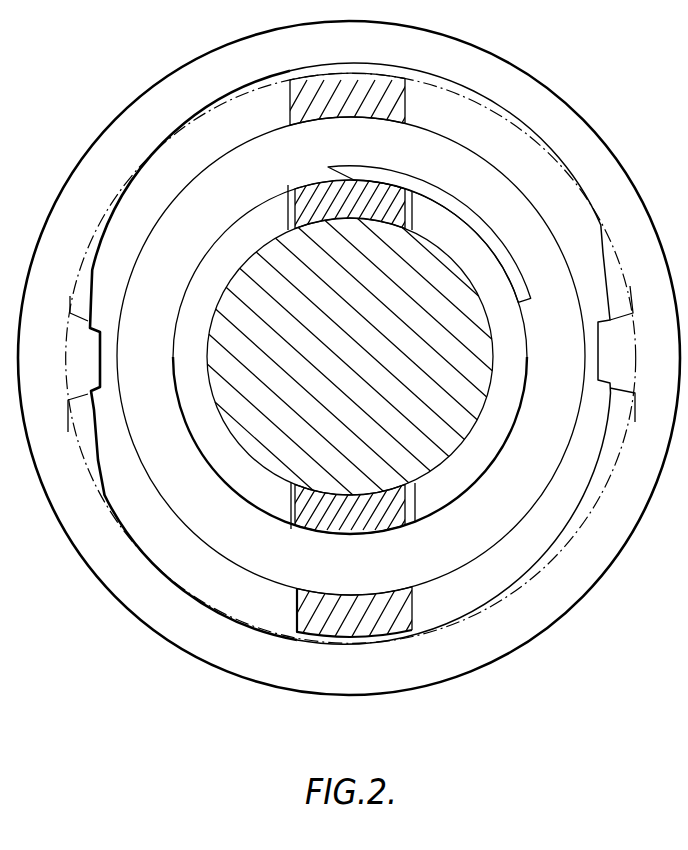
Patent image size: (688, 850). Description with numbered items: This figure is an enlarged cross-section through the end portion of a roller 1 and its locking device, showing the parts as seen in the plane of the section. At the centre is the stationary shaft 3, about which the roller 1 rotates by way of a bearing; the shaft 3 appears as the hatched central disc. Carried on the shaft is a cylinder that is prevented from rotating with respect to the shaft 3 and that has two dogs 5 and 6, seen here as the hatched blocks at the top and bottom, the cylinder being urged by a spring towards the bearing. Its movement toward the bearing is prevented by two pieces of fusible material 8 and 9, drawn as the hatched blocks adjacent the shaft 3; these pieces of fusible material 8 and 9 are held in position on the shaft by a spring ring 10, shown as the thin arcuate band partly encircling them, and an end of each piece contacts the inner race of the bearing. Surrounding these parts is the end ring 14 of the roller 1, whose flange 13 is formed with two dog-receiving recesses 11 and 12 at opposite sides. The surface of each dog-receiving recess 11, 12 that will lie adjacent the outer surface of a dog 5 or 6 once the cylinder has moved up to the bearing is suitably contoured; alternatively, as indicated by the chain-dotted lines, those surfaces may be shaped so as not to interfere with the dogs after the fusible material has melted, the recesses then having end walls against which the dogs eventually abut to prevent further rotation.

The roller 1 is at (545, 82).
The stationary shaft 3 is at (240, 293).
The dog 5 is at (302, 100).
The dog 6 is at (310, 598).
The piece of fusible material 8 is at (302, 188).
The piece of fusible material 9 is at (355, 533).
The spring ring 10 is at (417, 187).
The dog-receiving recess 11 is at (118, 240).
The dog-receiving recess 12 is at (600, 395).
The flange 13 is at (559, 143).
The end ring 14 is at (88, 146).